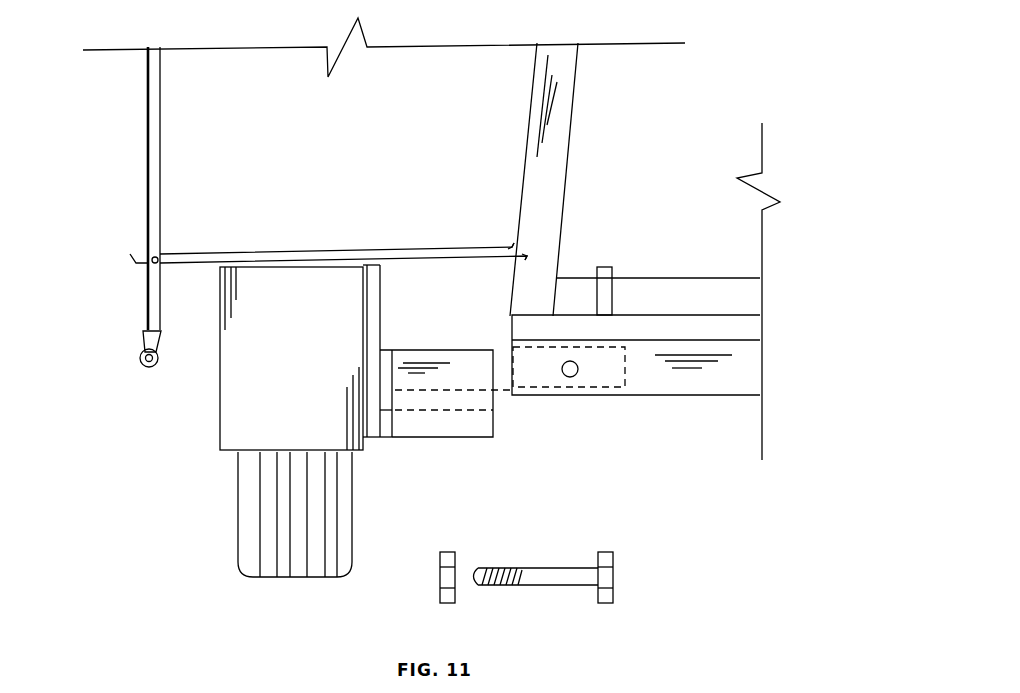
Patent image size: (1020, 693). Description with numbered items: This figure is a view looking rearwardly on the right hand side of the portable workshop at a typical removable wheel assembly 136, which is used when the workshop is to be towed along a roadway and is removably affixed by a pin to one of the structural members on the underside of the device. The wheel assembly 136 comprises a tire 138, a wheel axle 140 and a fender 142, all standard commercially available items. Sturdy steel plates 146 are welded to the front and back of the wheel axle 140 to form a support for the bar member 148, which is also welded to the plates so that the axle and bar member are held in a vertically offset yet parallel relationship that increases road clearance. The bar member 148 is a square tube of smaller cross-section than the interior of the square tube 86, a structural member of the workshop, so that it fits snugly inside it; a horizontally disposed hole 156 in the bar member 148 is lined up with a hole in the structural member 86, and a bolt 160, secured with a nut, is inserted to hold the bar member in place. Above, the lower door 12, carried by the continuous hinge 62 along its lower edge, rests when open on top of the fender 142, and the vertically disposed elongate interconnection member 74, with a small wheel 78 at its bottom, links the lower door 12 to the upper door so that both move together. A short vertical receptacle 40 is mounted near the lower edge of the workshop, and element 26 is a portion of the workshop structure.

The lower door 12 is at (238, 260).
The support column 26 is at (538, 193).
The short vertical receptacle 40 is at (604, 297).
The continuous hinge 62 is at (518, 256).
The interconnection member 74 is at (157, 155).
The small wheel 78 is at (140, 348).
The square tube 86 is at (699, 373).
The removable wheel assembly 136 is at (275, 378).
The tire 138 is at (262, 507).
The wheel axle 140 is at (386, 420).
The fender 142 is at (345, 298).
The steel plate 146 is at (472, 418).
The bar member 148 is at (538, 372).
The horizontally disposed hole 156 is at (575, 375).
The bolt 160 is at (540, 580).